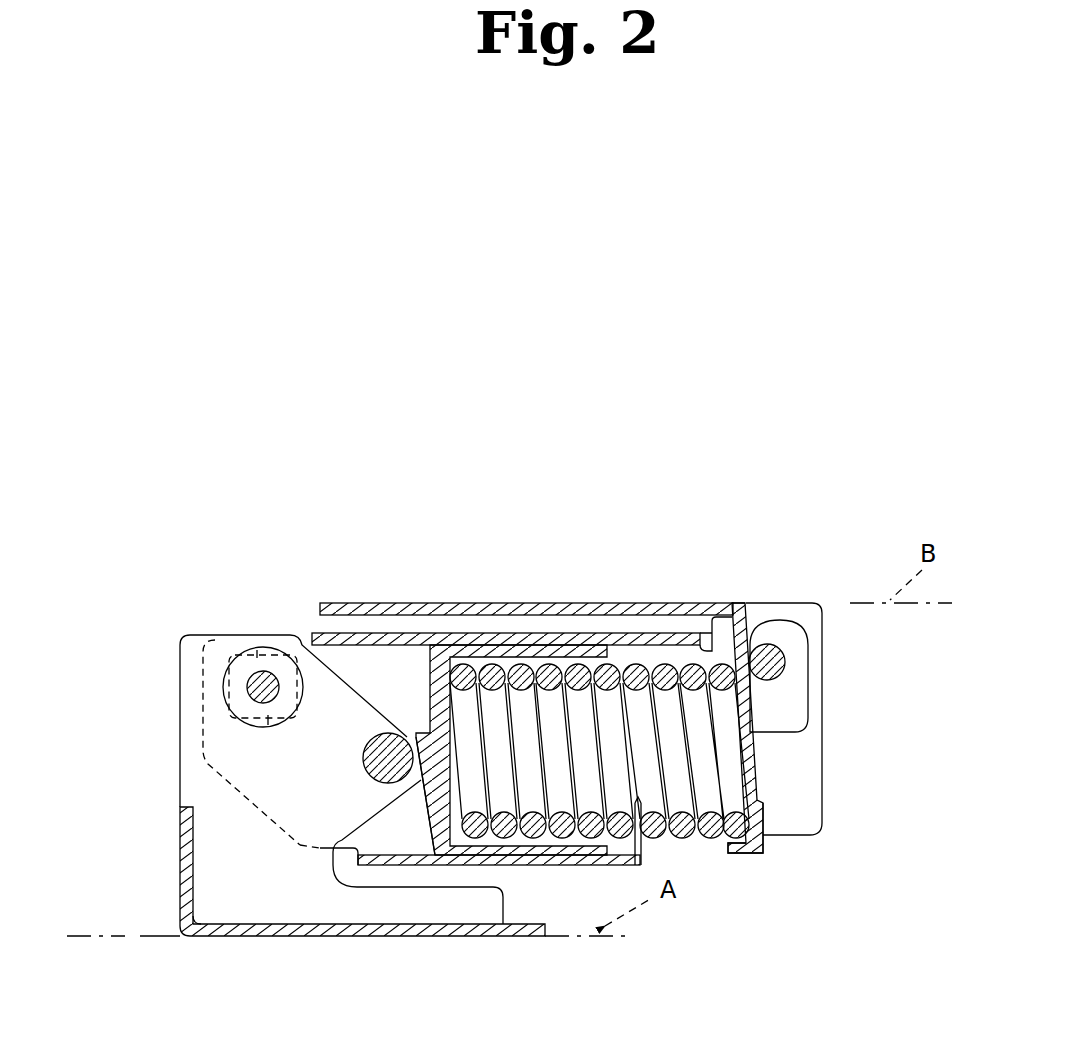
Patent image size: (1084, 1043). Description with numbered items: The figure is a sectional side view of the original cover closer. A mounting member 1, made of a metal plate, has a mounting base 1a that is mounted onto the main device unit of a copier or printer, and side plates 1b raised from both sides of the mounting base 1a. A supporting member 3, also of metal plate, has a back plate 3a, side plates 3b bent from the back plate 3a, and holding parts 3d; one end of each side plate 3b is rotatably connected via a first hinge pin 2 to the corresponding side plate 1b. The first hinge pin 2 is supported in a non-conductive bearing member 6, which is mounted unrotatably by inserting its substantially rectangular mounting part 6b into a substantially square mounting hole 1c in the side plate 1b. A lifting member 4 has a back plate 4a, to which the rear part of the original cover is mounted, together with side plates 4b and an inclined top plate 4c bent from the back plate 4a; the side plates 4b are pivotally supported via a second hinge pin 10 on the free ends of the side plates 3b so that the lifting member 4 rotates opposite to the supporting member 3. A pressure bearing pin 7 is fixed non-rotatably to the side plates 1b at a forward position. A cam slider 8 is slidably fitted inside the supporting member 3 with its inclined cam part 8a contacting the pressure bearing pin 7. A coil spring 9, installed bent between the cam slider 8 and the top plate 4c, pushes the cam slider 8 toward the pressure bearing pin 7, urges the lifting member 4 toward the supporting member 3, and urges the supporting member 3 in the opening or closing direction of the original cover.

The mounting member 1 is at (168, 818).
The mounting base 1a is at (296, 908).
The side plates 1b is at (193, 772).
The mounting holes 1c is at (247, 695).
The first hinge pin 2 is at (266, 704).
The supporting member 3 is at (532, 625).
The back plate 3a is at (441, 638).
The side plates 3b is at (677, 652).
The holding parts 3d is at (535, 862).
The lifting member 4 is at (624, 580).
The back plate 4a is at (665, 598).
The side plates 4b is at (789, 818).
The top plate 4c is at (758, 634).
The bearing member 6 is at (232, 655).
The mounting part 6b is at (261, 645).
The pressure bearing pin 7 is at (365, 767).
The cam slider 8 is at (430, 678).
The inclined cam part 8a is at (427, 823).
The coil spring 9 is at (596, 858).
The second hinge pin 10 is at (785, 665).